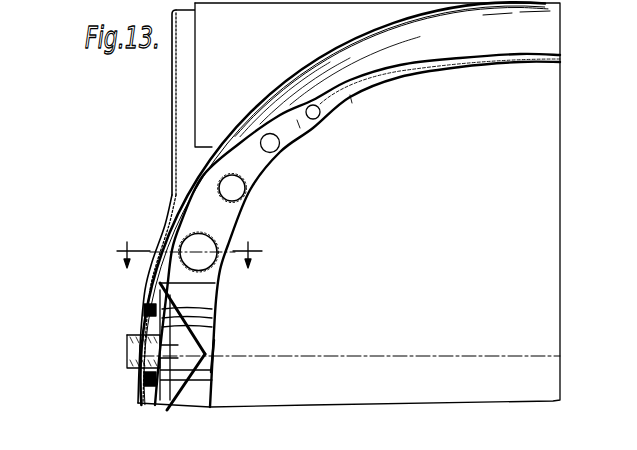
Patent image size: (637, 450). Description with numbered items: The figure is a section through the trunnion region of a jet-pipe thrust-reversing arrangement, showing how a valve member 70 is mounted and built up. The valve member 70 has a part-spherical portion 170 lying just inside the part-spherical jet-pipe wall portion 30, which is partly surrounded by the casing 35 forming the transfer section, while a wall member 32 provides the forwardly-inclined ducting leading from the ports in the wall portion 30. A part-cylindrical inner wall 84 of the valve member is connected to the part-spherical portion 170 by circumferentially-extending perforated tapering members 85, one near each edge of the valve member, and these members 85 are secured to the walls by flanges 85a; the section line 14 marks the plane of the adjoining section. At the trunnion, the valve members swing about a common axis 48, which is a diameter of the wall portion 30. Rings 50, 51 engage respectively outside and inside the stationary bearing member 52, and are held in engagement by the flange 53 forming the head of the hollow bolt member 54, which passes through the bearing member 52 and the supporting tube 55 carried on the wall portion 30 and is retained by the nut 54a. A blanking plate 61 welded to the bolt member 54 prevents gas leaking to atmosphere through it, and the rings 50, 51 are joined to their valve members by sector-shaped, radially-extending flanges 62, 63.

The section line 14 is at (186, 247).
The part-spherical jet-pipe wall portion 30 is at (163, 222).
The wall member 32 is at (196, 90).
The casing 35 is at (172, 113).
The common axis 48 is at (360, 357).
The ring 50 is at (163, 311).
The ring 51 is at (206, 358).
The stationary bearing member 52 is at (168, 320).
The flange 53 is at (170, 330).
The bolt member 54 is at (130, 350).
The nut 54a is at (144, 337).
The supporting tube 55 is at (146, 307).
The blanking plate 61 is at (158, 351).
The sector-shaped radially-extending flange 62 is at (167, 291).
The sector-shaped radially-extending flange 63 is at (176, 396).
The valve member 70 is at (318, 58).
The part-cylindrical inner wall 84 is at (360, 82).
The perforated tapering member 85 is at (265, 160).
The flange 85a is at (263, 186).
The part-spherical portion 170 is at (266, 104).